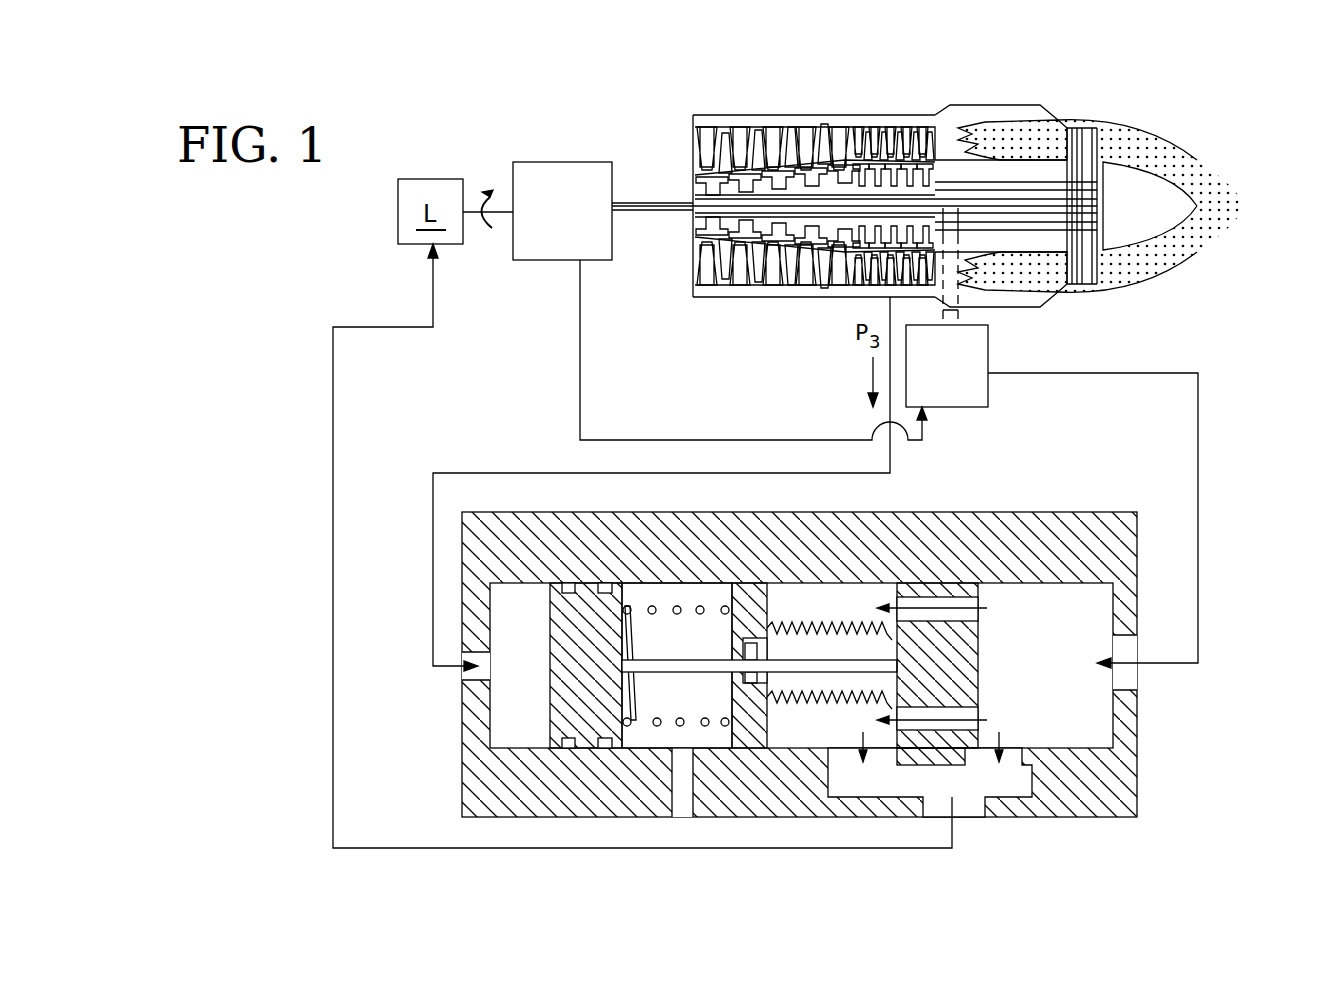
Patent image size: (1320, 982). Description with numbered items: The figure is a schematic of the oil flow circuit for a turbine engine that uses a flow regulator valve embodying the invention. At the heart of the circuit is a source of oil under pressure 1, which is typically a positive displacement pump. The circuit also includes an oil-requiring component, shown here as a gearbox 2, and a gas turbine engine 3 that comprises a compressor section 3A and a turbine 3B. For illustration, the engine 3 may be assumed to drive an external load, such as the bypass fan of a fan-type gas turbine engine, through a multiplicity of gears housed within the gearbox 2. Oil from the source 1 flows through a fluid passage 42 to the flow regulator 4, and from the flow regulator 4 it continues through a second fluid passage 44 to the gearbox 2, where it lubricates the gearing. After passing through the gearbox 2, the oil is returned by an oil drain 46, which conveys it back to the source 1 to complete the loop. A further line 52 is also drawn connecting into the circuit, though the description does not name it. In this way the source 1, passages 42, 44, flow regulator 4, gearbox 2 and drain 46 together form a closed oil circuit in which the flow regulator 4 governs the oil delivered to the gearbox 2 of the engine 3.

The source of oil under pressure 1 is at (960, 383).
The gearbox 2 is at (577, 230).
The gas turbine engine 3 is at (928, 168).
The compressor section 3A is at (935, 105).
The turbine 3B is at (1083, 125).
The flow regulator 4 is at (1030, 818).
The fluid passage 42 is at (1198, 512).
The fluid passage 44 is at (830, 848).
The oil drain 46 is at (780, 440).
The pressure signal line 52 is at (710, 473).